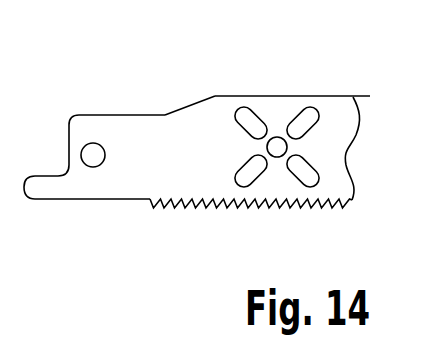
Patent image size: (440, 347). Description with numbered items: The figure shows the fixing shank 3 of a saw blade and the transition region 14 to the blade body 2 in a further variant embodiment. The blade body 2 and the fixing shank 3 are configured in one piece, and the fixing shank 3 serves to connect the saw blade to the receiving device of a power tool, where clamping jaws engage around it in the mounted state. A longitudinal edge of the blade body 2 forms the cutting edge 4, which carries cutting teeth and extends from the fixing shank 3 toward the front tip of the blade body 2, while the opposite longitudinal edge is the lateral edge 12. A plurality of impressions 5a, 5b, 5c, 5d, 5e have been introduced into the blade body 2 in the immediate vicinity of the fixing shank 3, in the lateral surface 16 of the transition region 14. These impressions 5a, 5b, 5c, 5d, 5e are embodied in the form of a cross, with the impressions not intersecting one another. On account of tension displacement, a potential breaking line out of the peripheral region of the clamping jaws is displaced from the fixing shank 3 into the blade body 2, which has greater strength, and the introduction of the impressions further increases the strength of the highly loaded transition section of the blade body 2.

The blade body 2 is at (342, 115).
The fixing shank 3 is at (94, 183).
The cutting edge 4 is at (180, 207).
The impression 5a is at (243, 110).
The impression 5b is at (310, 110).
The impression 5c is at (313, 185).
The impression 5d is at (243, 185).
The impression 5e is at (276, 145).
The lateral edge 12 is at (225, 90).
The transition region 14 is at (185, 132).
The lateral surface 16 is at (330, 162).